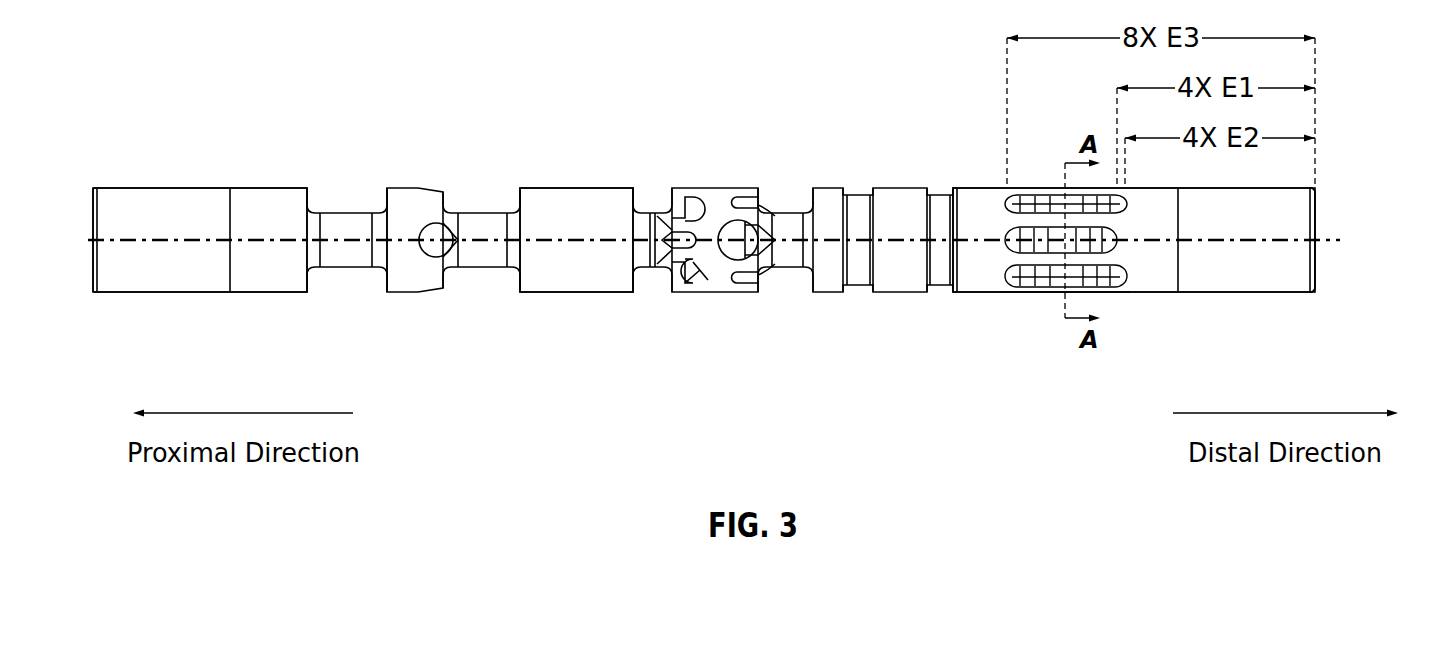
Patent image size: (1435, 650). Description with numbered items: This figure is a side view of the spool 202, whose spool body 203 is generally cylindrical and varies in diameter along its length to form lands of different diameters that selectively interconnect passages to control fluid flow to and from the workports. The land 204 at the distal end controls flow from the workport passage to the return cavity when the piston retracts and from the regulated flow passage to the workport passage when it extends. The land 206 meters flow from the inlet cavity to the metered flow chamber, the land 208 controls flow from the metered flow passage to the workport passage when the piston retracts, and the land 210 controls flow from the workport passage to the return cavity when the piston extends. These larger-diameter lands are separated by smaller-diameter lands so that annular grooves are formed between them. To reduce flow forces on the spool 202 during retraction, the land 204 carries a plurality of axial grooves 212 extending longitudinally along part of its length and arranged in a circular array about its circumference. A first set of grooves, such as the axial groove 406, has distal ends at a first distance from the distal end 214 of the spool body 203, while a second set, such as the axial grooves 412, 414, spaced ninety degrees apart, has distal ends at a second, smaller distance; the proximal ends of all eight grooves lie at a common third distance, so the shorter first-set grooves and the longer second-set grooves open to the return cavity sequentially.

The spool 202 is at (222, 112).
The spool body 203 is at (159, 177).
The land 204 is at (975, 188).
The land 206 is at (722, 188).
The land 208 is at (572, 188).
The land 210 is at (412, 188).
The axial grooves 212 is at (1049, 332).
The distal end 214 is at (1315, 228).
The axial groove 406 is at (1098, 259).
The axial groove 412 is at (1017, 295).
The axial groove 414 is at (1042, 193).